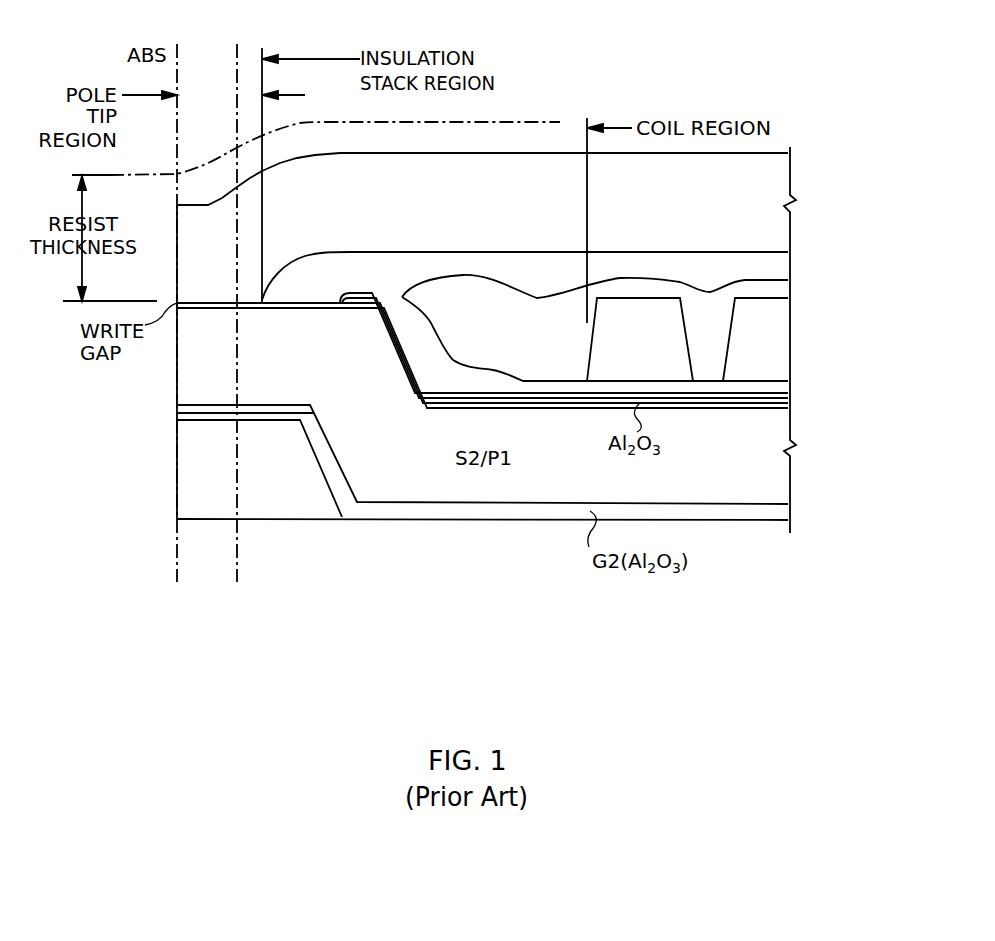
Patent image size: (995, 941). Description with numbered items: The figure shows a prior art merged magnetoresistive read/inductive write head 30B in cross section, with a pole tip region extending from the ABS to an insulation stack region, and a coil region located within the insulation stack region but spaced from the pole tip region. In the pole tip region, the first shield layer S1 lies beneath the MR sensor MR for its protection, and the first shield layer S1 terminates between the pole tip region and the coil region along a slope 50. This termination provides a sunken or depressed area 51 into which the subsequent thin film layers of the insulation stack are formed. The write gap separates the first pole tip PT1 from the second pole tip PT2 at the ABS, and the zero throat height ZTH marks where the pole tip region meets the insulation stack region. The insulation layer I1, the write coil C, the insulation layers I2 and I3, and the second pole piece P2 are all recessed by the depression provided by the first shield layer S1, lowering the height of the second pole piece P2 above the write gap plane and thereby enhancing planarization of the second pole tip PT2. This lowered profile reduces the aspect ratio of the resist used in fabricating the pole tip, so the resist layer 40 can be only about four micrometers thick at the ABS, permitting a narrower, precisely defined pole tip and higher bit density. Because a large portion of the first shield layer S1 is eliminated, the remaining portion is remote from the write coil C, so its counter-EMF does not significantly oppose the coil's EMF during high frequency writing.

The resist layer 40 is at (560, 126).
The head 30B is at (784, 136).
The slope 50 is at (325, 466).
The sunken or depressed area 51 is at (779, 484).
The first pole tip PT1 is at (175, 390).
The second pole tip PT2 is at (177, 242).
The zero throat height ZTH is at (262, 211).
The second pole piece P2 is at (525, 247).
The insulation layer I1 is at (482, 350).
The insulation layer I2 is at (595, 339).
The insulation layer I3 is at (595, 282).
The write coil C is at (687, 339).
The MR sensor MR is at (207, 410).
The first shield layer S1 is at (259, 468).